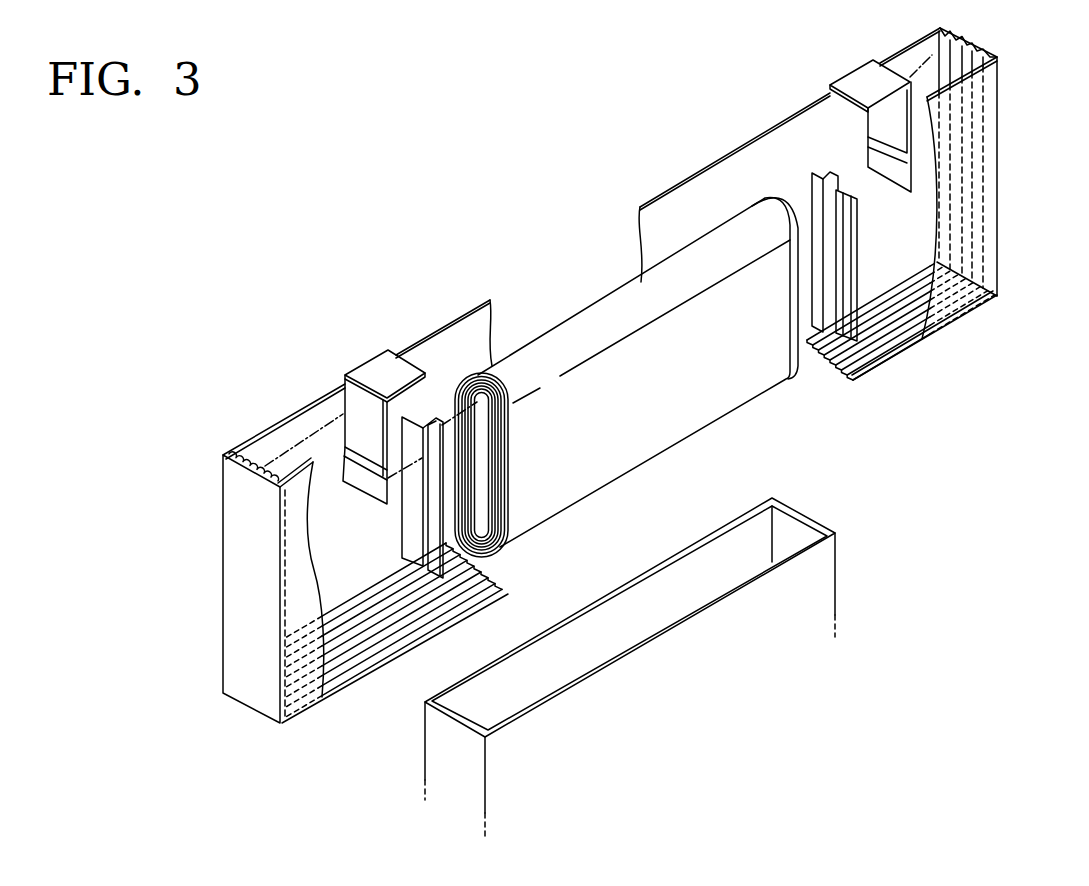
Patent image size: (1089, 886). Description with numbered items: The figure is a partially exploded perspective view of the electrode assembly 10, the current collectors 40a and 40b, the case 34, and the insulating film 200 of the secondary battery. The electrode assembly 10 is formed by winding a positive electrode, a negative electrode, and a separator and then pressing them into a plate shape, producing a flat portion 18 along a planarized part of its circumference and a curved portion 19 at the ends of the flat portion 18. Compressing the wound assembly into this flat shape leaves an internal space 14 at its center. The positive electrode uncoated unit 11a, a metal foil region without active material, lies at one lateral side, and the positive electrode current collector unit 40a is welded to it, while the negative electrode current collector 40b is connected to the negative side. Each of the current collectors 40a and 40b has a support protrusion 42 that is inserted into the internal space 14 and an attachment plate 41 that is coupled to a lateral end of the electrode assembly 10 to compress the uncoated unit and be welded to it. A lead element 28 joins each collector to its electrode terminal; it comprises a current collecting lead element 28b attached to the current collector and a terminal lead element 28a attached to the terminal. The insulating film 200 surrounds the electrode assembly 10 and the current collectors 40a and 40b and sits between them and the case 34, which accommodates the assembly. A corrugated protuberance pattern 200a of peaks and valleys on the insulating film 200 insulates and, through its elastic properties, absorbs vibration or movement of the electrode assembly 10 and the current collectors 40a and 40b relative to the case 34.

The electrode assembly 10 is at (593, 431).
The positive electrode uncoated unit 11a is at (501, 528).
The internal space 14 is at (474, 525).
The flat portion 18 is at (681, 407).
The curved portion 19 is at (644, 466).
The lead element 28 is at (600, 269).
The terminal lead element 28a is at (373, 366).
The current collecting lead element 28b is at (364, 402).
The case 34 is at (820, 583).
The positive electrode current collector unit 40a is at (399, 461).
The negative electrode current collector 40b is at (860, 275).
The attachment plate 41 is at (407, 541).
The support protrusion 42 is at (434, 420).
The insulating film 200 is at (228, 612).
The protuberance pattern 200a is at (970, 51).